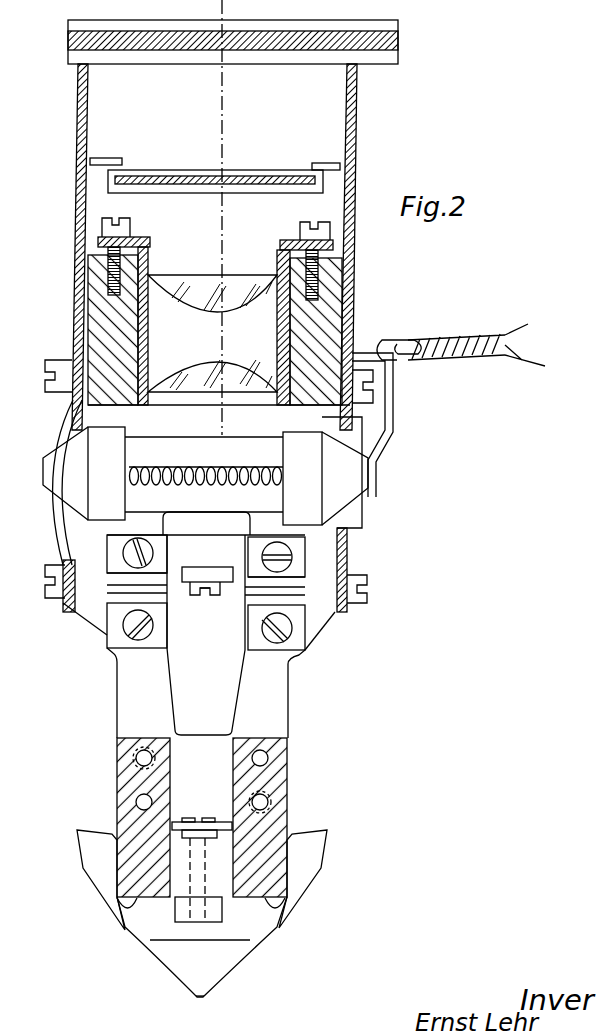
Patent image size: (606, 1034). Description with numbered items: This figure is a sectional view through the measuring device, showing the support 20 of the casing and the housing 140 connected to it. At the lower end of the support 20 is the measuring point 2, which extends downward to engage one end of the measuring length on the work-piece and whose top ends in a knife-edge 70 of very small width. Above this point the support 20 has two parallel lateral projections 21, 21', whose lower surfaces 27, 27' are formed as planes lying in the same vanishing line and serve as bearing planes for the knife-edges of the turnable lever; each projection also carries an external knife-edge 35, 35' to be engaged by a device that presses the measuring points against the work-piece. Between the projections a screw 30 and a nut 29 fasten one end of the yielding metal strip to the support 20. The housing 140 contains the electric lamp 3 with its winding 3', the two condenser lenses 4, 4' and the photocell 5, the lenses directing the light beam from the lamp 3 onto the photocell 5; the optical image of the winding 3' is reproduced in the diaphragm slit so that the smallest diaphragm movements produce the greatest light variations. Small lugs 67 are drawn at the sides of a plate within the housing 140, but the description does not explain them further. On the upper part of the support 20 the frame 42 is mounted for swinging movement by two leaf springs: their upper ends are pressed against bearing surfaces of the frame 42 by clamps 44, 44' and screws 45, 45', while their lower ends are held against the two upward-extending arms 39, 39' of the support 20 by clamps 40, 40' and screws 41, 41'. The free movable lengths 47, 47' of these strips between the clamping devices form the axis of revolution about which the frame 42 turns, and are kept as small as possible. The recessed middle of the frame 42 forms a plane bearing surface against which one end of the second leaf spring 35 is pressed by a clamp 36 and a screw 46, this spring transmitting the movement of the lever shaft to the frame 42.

The photocell 5 is at (68, 38).
The housing 140 is at (351, 136).
The knife-edge 70 is at (252, 176).
The support lugs 67 is at (118, 148).
The condenser lens 4' is at (212, 283).
The condenser lens 4 is at (212, 365).
The electric lamp 3 is at (192, 476).
The winding 3' is at (204, 460).
The frame 42 is at (193, 547).
The clamp 44 is at (123, 548).
The screw 45 is at (102, 554).
The clamp 44' is at (324, 541).
The screw 45' is at (324, 555).
The free movable length 47 is at (152, 614).
The free movable length 47' is at (313, 615).
The screw 41 is at (105, 625).
The screw 41' is at (297, 630).
The leaf spring 35 is at (157, 736).
The clamp 36 is at (225, 583).
The screw 46 is at (205, 598).
The clamp 40 is at (89, 632).
The arm 39 is at (110, 693).
The clamp 40' is at (327, 644).
The arm 39' is at (306, 694).
The support 20 is at (196, 745).
The lateral projection 21 is at (125, 817).
The lateral projection 21' is at (282, 817).
The screw 30 is at (197, 848).
The nut 29 is at (180, 912).
The lower surface 27 is at (111, 916).
The lower surface 27' is at (292, 916).
The external knife-edge 35' is at (309, 866).
The measuring point 2 is at (247, 935).